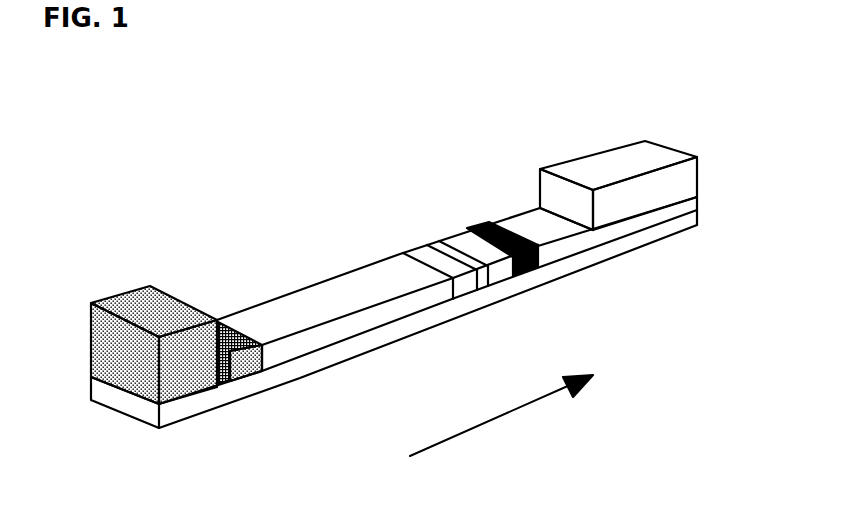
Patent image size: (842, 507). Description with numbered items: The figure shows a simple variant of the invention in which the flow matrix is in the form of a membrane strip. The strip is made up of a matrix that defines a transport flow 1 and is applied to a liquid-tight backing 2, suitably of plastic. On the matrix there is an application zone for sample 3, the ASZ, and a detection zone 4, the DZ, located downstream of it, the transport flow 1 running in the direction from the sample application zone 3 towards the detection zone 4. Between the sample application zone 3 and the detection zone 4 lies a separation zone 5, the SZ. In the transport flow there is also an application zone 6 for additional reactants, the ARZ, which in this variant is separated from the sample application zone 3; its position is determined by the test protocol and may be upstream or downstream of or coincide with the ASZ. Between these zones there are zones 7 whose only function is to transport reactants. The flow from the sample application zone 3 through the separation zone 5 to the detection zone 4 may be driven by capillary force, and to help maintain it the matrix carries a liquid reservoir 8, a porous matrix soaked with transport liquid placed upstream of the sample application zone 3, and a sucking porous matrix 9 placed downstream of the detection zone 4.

The transport flow 1 is at (501, 418).
The liquid-tight backing 2 is at (431, 317).
The application zone for sample 3 is at (243, 370).
The detection zone 4 is at (529, 272).
The separation zone 5 is at (271, 302).
The application zone for additional reactants 6 is at (440, 238).
The transport zones 7 is at (461, 242).
The liquid reservoir 8 is at (135, 380).
The sucking porous matrix 9 is at (597, 162).